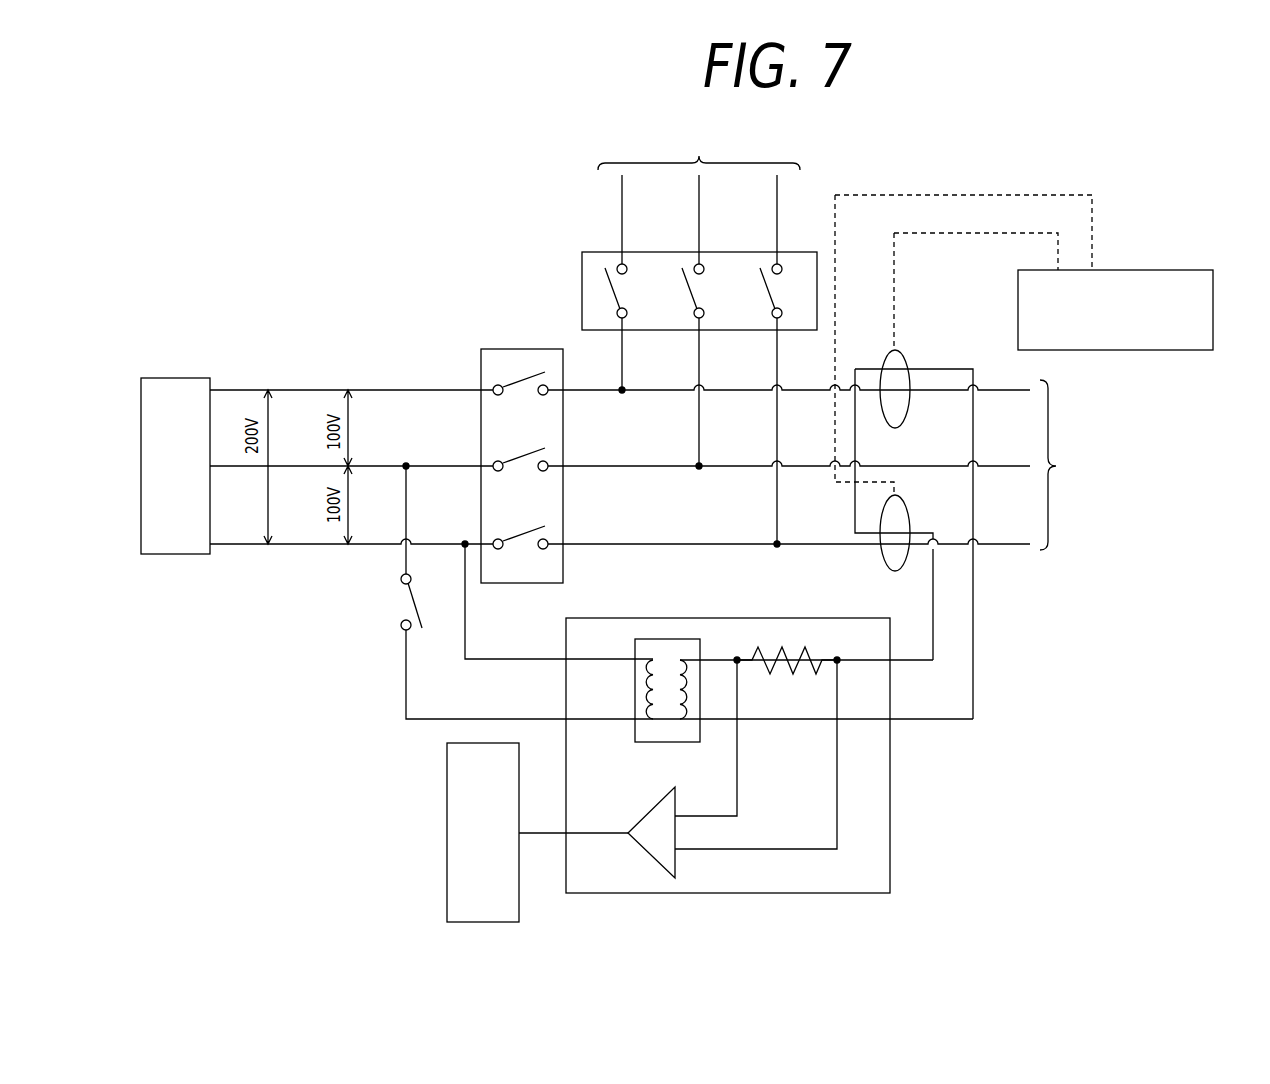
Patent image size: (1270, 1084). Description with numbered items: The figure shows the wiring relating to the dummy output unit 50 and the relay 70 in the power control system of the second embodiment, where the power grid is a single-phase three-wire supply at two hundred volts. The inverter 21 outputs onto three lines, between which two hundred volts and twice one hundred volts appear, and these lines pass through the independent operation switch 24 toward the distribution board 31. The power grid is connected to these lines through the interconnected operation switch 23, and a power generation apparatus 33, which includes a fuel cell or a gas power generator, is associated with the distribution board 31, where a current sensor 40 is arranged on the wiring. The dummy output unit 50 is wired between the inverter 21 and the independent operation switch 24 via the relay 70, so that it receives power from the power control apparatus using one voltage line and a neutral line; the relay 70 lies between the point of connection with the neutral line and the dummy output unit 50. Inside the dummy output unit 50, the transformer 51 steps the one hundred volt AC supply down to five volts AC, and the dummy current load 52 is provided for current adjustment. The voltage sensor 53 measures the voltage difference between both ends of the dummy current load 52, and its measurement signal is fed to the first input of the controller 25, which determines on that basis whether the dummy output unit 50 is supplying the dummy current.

The inverter 21 is at (172, 379).
The interconnected operation switch 23 is at (582, 272).
The independent operation switch 24 is at (518, 349).
The controller 25 is at (447, 893).
The distribution board 31 is at (1060, 544).
The power generation apparatus 33 is at (1110, 270).
The current sensor 40 is at (905, 358).
The dummy output unit 50 is at (697, 755).
The transformer 51 is at (670, 639).
The dummy current load 52 is at (791, 653).
The voltage sensor 53 is at (790, 775).
The relay 70 is at (405, 602).